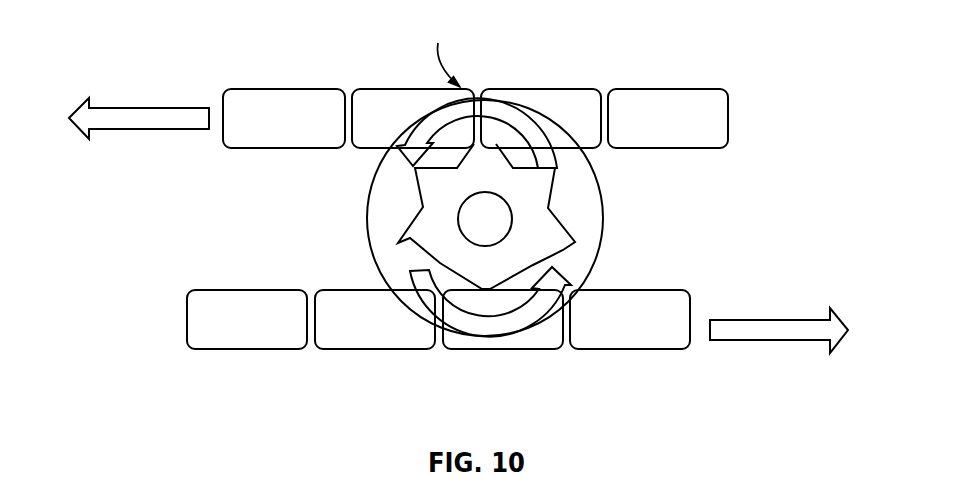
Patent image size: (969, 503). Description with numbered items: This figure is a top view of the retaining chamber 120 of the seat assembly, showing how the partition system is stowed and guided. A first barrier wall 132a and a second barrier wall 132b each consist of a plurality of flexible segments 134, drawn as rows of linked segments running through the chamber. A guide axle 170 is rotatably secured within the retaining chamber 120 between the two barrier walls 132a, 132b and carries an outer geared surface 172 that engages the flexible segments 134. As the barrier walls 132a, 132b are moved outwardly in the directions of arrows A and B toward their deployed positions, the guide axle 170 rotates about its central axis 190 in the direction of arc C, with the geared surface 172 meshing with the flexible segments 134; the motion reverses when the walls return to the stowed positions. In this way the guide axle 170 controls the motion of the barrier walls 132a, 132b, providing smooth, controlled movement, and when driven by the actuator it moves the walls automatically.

The retaining chamber 120 is at (813, 130).
The first barrier wall 132a is at (557, 88).
The second barrier wall 132b is at (622, 378).
The flexible segment 134 is at (658, 110).
The guide axle 170 is at (632, 223).
The outer geared surface 172 is at (407, 238).
The central axis 190 is at (485, 220).